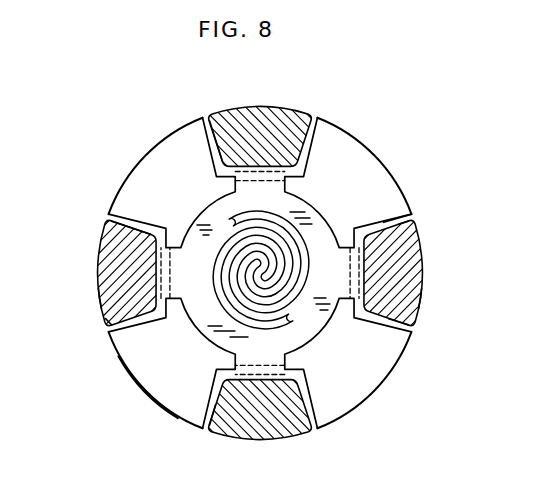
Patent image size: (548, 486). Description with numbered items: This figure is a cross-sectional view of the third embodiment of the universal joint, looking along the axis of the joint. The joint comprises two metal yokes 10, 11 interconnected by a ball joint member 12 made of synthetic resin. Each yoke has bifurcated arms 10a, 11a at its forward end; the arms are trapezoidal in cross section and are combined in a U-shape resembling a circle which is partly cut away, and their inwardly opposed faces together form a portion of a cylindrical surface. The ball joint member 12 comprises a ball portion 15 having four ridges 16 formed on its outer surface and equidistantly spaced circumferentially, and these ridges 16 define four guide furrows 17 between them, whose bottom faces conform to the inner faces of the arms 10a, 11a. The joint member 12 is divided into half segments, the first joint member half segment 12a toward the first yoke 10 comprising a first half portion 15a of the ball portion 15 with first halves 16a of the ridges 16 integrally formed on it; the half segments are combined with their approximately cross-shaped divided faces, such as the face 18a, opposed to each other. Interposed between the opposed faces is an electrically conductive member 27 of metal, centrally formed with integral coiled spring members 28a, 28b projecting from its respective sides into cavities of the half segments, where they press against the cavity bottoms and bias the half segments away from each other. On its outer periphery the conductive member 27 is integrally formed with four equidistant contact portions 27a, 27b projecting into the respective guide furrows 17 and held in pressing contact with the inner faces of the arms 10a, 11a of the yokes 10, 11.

The first yoke 10 is at (418, 227).
The arm of first yoke 10a is at (423, 285).
The second yoke 11 is at (302, 117).
The arm of second yoke 11a is at (212, 145).
The ball joint member 12 is at (261, 269).
The first joint member half segment 12a is at (138, 160).
The ball portion 15 is at (413, 220).
The first half portion 15a is at (108, 320).
The ridges 16 is at (340, 128).
The first halves of ridges 16a is at (259, 275).
The guide furrows 17 is at (215, 142).
The divided face of first half segment 18a is at (147, 367).
The electrically conductive member 27 is at (338, 328).
The contact portion 27a is at (357, 265).
The contact portion 27b is at (267, 172).
The first spring member 28a is at (262, 290).
The second spring member 28b is at (251, 252).